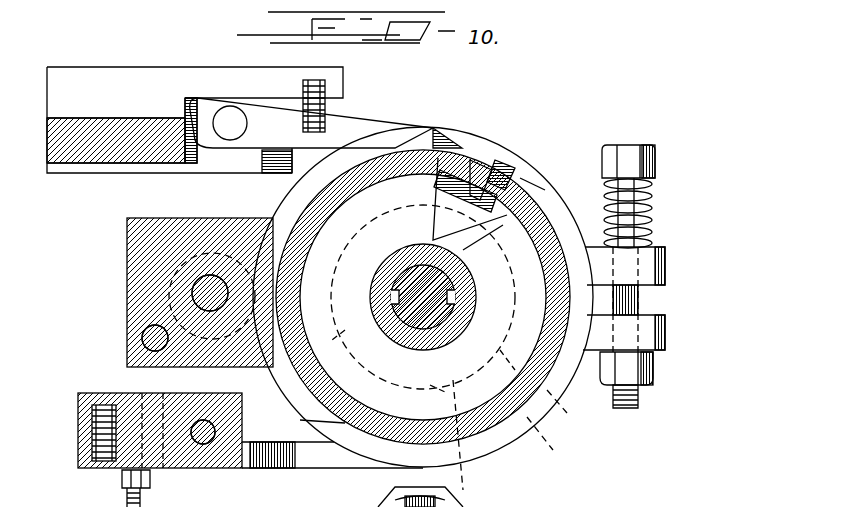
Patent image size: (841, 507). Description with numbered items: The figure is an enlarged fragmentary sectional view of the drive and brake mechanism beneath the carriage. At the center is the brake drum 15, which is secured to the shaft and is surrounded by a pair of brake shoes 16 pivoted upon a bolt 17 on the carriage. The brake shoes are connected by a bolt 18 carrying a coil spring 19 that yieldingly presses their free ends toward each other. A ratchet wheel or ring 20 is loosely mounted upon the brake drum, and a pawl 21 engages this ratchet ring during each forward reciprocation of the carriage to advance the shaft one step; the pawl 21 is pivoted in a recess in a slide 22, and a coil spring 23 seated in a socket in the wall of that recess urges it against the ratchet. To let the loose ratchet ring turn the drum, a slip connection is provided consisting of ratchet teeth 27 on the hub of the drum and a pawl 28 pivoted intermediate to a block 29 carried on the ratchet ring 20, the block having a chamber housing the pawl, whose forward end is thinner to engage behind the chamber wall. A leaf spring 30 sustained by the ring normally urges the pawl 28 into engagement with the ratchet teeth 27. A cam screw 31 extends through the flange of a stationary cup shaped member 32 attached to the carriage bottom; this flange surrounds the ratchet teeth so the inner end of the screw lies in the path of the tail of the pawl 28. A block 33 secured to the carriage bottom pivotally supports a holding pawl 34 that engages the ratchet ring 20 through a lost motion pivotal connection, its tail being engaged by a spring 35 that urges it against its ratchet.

The brake drum 15 is at (540, 445).
The brake shoes 16 is at (538, 170).
The bolt 17 is at (203, 293).
The bolt 18 is at (630, 406).
The coil spring 19 is at (645, 210).
The ratchet wheel or ring 20 is at (562, 398).
The pawl 21 is at (353, 128).
The slide 22 is at (115, 133).
The coil spring 23 is at (322, 108).
The ratchet teeth 27 is at (448, 166).
The pawl 28 is at (477, 167).
The block 29 is at (467, 250).
The leaf spring 30 is at (566, 195).
The cam screw 31 is at (507, 165).
The cup shaped member 32 is at (308, 423).
The block 33 is at (172, 470).
The holding pawl 34 is at (277, 462).
The spring 35 is at (100, 405).